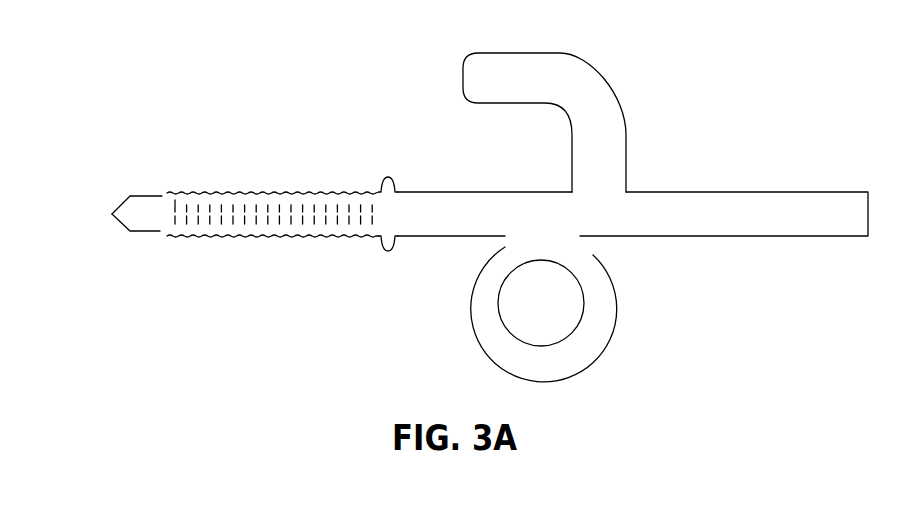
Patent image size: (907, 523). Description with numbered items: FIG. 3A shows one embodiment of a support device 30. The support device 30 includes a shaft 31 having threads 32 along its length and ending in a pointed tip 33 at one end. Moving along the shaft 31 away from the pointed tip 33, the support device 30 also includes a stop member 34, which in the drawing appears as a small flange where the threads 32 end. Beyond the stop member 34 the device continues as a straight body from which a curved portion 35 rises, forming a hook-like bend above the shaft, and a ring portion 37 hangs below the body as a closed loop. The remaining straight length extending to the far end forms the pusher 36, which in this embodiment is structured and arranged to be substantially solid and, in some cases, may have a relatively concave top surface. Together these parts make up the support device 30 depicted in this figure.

The support device 30 is at (390, 98).
The shaft 31 is at (440, 191).
The threads 32 is at (260, 193).
The pointed tip 33 is at (112, 214).
The stop member 34 is at (395, 240).
The curved portion 35 is at (594, 73).
The pusher 36 is at (747, 191).
The ring portion 37 is at (615, 315).